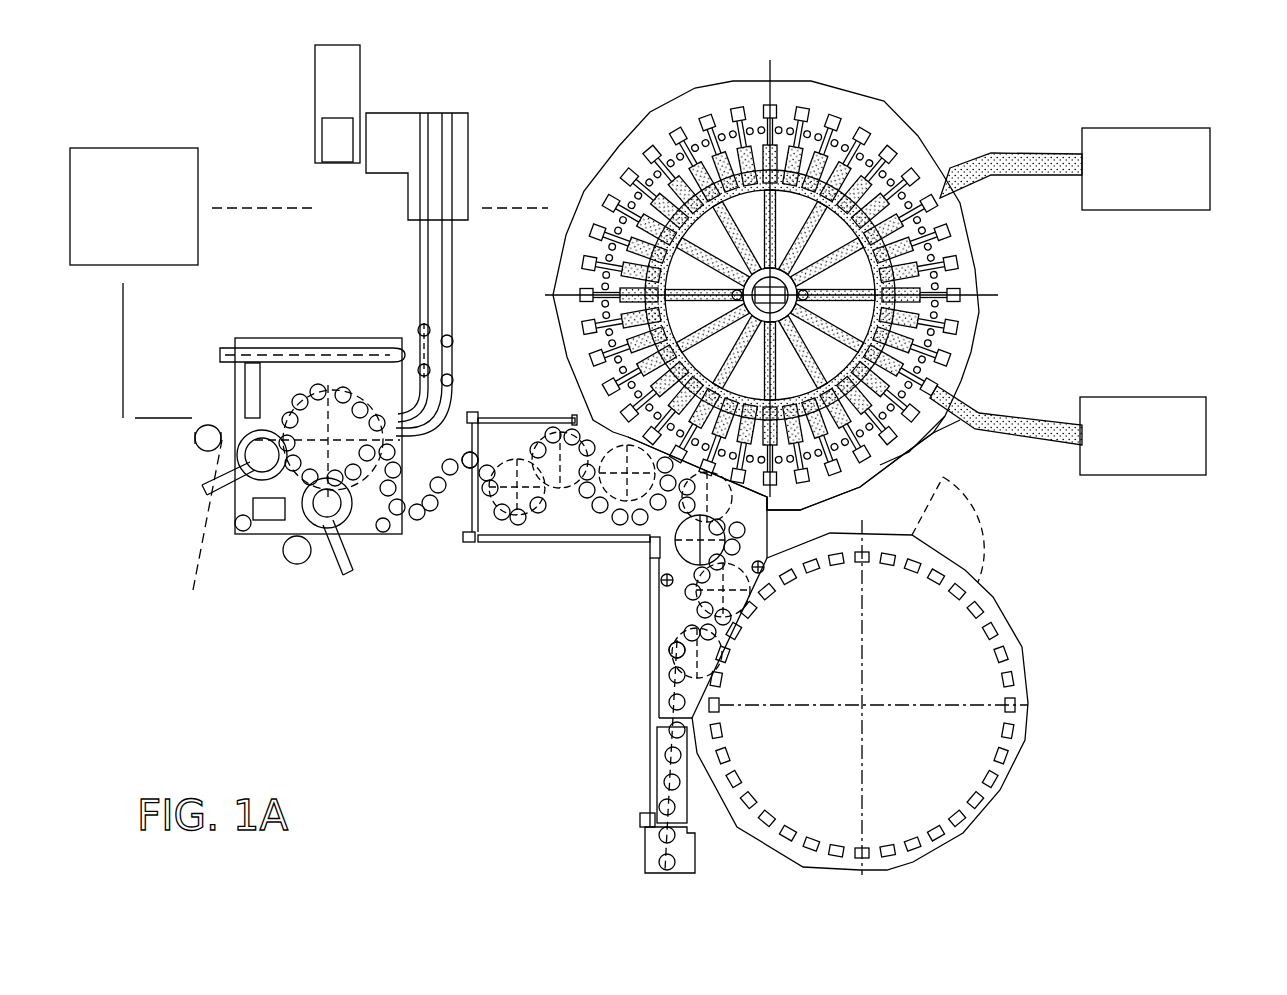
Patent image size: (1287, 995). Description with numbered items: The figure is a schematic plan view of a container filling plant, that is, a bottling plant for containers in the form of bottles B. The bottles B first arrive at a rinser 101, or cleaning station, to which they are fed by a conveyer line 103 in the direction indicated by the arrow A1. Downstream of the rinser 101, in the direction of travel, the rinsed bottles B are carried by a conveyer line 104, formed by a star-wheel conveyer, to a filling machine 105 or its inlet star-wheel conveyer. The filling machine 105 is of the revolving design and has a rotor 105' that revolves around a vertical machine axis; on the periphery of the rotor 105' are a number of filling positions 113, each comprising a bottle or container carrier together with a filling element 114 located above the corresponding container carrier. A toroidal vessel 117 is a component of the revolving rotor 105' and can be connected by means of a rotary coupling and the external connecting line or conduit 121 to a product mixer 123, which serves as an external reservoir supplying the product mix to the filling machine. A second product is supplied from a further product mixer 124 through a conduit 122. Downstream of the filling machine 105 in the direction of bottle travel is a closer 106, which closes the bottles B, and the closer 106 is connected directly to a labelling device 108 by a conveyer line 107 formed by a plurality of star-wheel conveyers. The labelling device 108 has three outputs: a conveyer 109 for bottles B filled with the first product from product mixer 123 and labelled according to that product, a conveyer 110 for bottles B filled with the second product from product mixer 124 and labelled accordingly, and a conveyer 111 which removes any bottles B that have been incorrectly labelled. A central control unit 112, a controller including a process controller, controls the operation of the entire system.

The rinser 101 is at (927, 686).
The conveyer line 103 is at (690, 787).
The conveyer line 104 is at (667, 618).
The filling machine 105 is at (840, 279).
The rotor 105' is at (766, 279).
The closer 106 is at (540, 410).
The conveyer line 107 is at (475, 552).
The labelling device 108 is at (263, 578).
The conveyer 109 is at (450, 322).
The conveyer 110 is at (420, 255).
The conveyer 111 is at (283, 345).
The central control unit 112 is at (157, 224).
The filling positions 113 is at (965, 223).
The filling element 114 is at (961, 327).
The toroidal vessel 117 is at (903, 461).
The conduit 121 is at (1023, 151).
The conduit 122 is at (1023, 416).
The product mixer 123 is at (1197, 180).
The product mixer 124 is at (1205, 445).
The arrow A1 is at (625, 780).
The bottles B is at (673, 807).